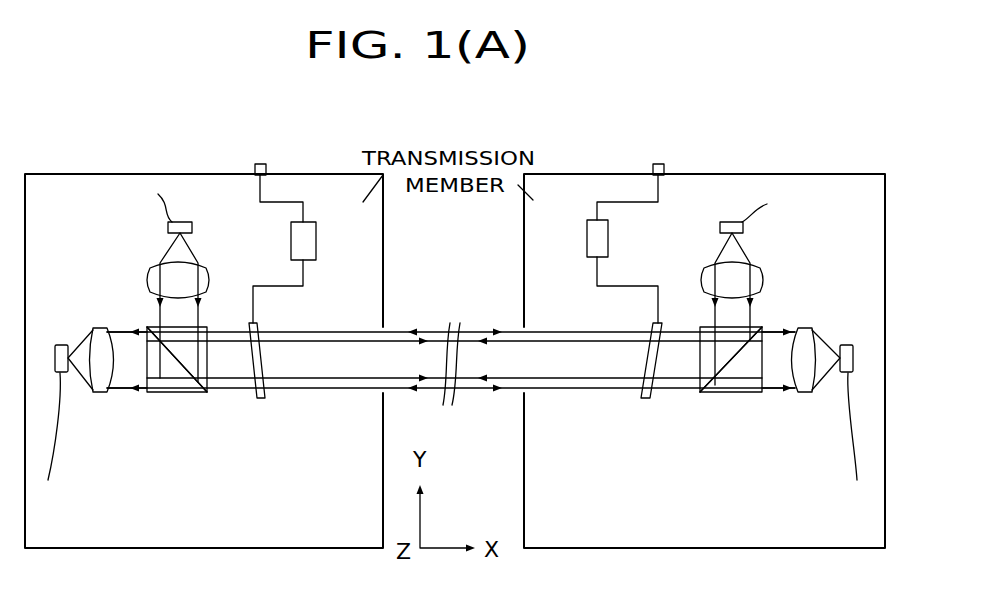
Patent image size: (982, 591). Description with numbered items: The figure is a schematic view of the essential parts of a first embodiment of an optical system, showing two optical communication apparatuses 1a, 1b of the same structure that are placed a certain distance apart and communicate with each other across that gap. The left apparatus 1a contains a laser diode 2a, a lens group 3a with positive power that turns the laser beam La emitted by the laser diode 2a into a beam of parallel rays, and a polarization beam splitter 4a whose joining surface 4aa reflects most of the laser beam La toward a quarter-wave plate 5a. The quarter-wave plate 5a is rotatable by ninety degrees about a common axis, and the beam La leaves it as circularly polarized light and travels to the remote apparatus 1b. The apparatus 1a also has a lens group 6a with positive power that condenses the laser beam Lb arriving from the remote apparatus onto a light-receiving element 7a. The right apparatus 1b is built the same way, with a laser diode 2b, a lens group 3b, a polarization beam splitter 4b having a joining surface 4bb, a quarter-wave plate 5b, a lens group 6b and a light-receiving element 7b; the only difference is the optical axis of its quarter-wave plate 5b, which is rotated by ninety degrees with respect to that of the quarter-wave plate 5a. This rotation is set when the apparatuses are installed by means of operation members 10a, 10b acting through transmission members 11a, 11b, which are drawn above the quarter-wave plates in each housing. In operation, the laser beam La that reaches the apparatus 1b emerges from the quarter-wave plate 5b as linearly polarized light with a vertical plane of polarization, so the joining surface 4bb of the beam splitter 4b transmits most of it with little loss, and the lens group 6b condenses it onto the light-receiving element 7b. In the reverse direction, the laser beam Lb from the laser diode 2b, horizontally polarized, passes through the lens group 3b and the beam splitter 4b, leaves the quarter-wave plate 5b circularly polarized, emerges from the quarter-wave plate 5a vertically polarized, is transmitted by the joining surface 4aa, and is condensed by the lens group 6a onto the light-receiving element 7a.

The optical communication apparatus 1a is at (224, 174).
The optical communication apparatus 1b is at (796, 104).
The laser diode 2a is at (192, 227).
The laser diode 2b is at (720, 228).
The lens group 3a is at (210, 282).
The lens group 3b is at (700, 282).
The polarization beam splitter 4a is at (158, 393).
The polarization beam splitter 4b is at (752, 393).
The joining surface 4aa is at (190, 393).
The joining surface 4bb is at (735, 393).
The quarter-wave plate 5a is at (258, 324).
The quarter-wave plate 5b is at (652, 323).
The lens group 6a is at (100, 328).
The lens group 6b is at (812, 328).
The light-receiving element 7a is at (58, 345).
The light-receiving element 7b is at (848, 345).
The operation member 10a is at (262, 164).
The operation member 10b is at (658, 164).
The transmission member 11a is at (317, 240).
The transmission member 11b is at (587, 243).
The laser beam La is at (158, 316).
The laser beam Lb is at (113, 393).